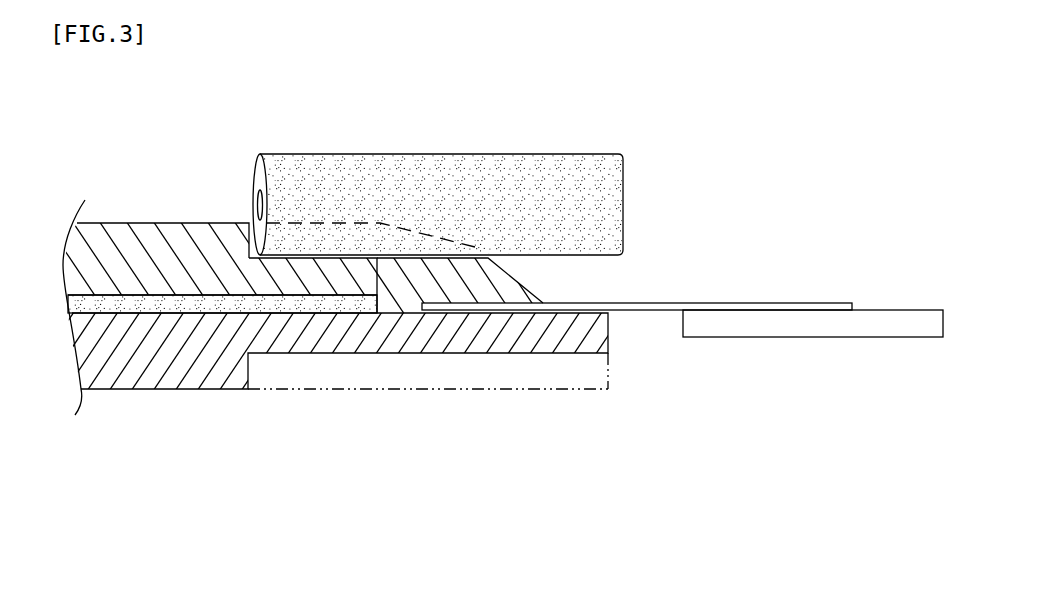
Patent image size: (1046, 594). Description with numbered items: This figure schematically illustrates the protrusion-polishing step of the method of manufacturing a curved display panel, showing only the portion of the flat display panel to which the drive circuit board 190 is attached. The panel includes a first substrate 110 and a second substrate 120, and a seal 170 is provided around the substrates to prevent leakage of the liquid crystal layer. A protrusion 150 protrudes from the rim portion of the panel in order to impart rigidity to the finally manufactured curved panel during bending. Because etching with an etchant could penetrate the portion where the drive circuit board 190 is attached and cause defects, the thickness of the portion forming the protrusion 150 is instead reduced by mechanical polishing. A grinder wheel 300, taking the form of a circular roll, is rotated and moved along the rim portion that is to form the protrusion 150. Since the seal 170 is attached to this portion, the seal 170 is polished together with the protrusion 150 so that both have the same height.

The first substrate 110 is at (163, 365).
The second substrate 120 is at (145, 242).
The protrusion 150 is at (302, 272).
The seal 170 is at (510, 283).
The drive circuit board 190 is at (798, 328).
The grinder wheel 300 is at (471, 170).